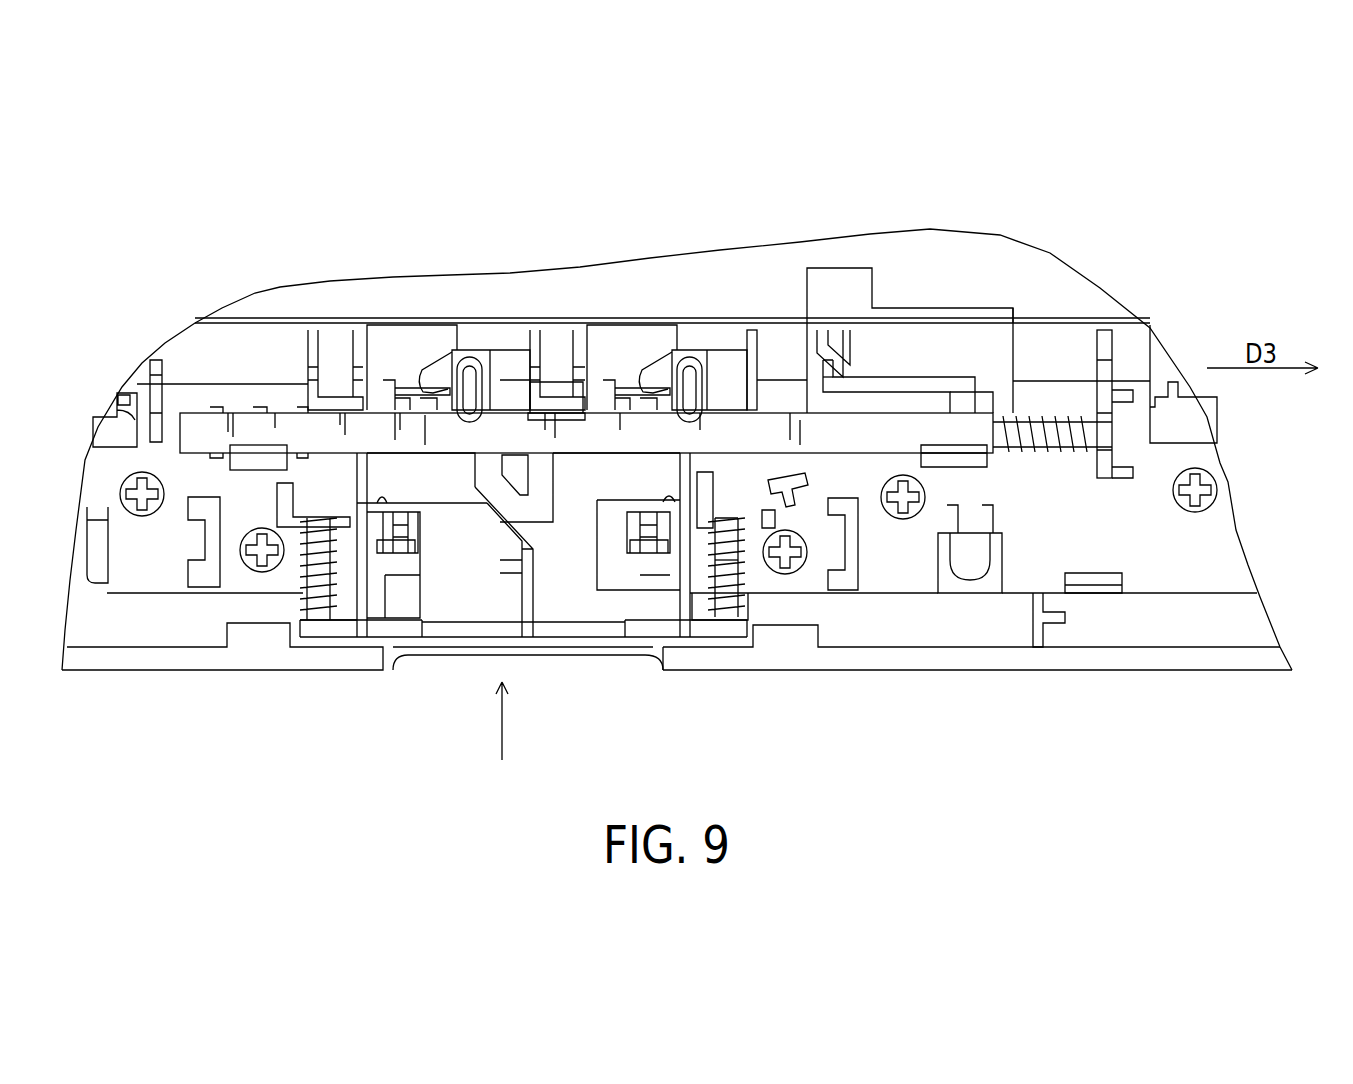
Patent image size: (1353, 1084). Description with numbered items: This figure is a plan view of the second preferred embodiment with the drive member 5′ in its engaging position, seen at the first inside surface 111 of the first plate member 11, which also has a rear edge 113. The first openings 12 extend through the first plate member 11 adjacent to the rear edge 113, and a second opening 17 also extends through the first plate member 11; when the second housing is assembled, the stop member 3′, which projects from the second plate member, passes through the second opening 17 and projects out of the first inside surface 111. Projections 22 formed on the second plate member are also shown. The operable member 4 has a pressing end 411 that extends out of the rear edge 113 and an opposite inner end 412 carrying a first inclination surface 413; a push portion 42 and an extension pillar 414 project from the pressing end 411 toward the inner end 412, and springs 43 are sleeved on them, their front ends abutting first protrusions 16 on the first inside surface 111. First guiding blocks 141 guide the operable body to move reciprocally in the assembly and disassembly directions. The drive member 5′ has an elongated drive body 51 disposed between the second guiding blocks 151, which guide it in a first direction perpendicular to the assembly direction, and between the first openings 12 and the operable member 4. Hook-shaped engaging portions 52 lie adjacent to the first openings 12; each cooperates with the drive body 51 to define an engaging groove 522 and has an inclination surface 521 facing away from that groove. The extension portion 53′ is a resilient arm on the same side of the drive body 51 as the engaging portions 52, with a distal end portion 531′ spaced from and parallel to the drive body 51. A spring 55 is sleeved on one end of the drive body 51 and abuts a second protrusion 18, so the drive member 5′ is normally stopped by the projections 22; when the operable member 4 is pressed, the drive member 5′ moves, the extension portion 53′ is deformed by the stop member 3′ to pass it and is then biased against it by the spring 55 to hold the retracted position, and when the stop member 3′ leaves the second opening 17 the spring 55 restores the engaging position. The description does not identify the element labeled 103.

The first plate member 11 is at (1072, 287).
The first inside surface 111 is at (1110, 307).
The opening 103 is at (1033, 310).
The rear edge 113 is at (817, 670).
The first openings 12 is at (405, 365).
The second guiding blocks 151 is at (257, 460).
The first protrusions 16 is at (753, 522).
The second opening 17 is at (902, 330).
The second protrusion 18 is at (1103, 457).
The projections 22 is at (385, 397).
The stop member 3′ is at (822, 333).
The operable member 4 is at (417, 685).
The pressing end 411 is at (472, 667).
The inner end 412 is at (440, 506).
The first inclination surface 413 is at (558, 588).
The extension pillar 414 is at (317, 575).
The first guiding blocks 141 is at (395, 543).
The push portion 42 is at (727, 580).
The springs 43 is at (318, 537).
The drive member 5′ is at (190, 403).
The drive body 51 is at (980, 422).
The engaging portions 52 is at (447, 370).
The inclination surface 521 is at (417, 380).
The engaging groove 522 is at (415, 382).
The extension portion 53′ is at (915, 382).
The distal end portion 531′ is at (830, 377).
The spring 55 is at (1040, 445).